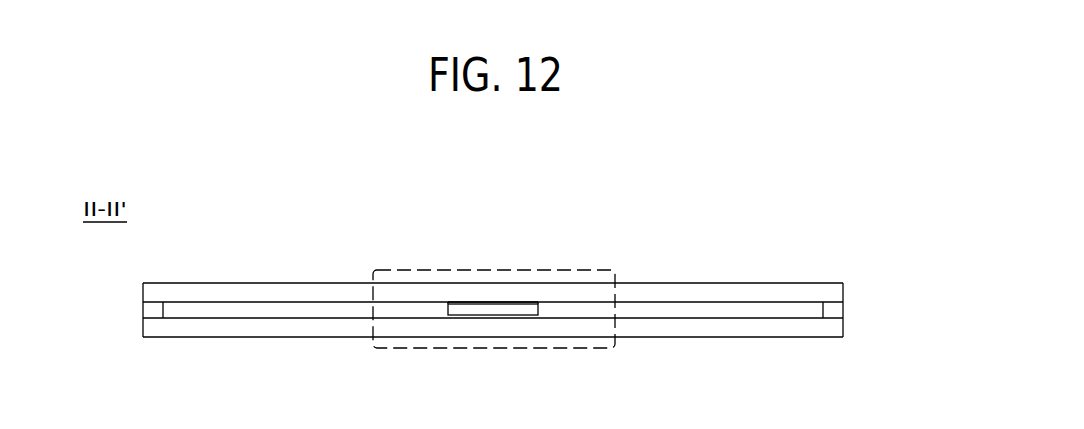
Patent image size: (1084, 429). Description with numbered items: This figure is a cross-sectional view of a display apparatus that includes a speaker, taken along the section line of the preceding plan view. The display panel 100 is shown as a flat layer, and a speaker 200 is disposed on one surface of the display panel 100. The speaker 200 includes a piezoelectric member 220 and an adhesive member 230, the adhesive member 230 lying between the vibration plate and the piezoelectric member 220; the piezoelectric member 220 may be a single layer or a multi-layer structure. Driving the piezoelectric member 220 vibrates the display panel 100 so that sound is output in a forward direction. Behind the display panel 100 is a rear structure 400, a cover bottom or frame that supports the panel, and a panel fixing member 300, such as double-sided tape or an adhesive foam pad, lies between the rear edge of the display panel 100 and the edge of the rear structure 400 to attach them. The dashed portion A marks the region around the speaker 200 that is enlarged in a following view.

The display panel 100 is at (227, 290).
The speaker 200 is at (528, 266).
The piezoelectric member 220 is at (481, 305).
The adhesive member 230 is at (540, 308).
The panel fixing member 300 is at (840, 310).
The rear structure 400 is at (227, 330).
The portion A is at (373, 272).